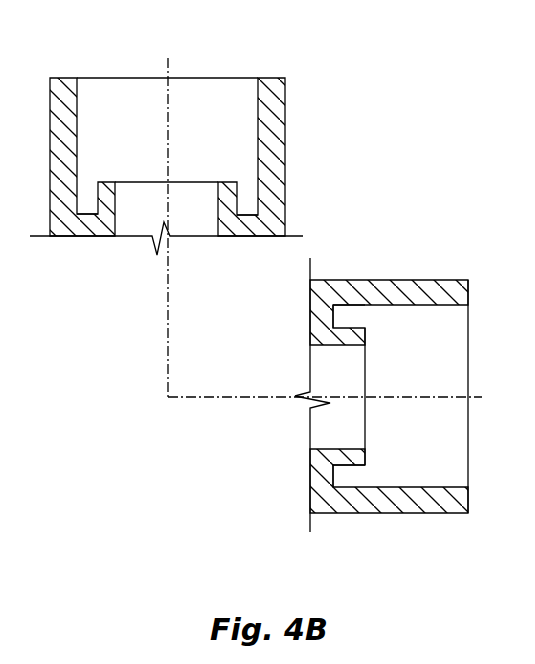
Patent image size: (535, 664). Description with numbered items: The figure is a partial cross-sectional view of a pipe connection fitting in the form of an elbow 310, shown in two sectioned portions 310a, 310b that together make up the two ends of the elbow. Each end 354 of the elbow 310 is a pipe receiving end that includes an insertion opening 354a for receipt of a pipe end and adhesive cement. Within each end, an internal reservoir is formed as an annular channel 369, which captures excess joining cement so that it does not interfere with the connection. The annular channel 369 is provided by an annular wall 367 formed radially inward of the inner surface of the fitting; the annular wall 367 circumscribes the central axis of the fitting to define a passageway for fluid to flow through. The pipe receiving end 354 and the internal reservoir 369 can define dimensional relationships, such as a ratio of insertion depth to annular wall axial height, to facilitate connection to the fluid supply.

The elbow 310 is at (452, 220).
The elbow portion 310a is at (285, 103).
The elbow portion 310b is at (437, 279).
The end 354 is at (63, 77).
The insertion opening 354a is at (222, 82).
The annular channel 369 is at (247, 198).
The annular wall 367 is at (362, 458).